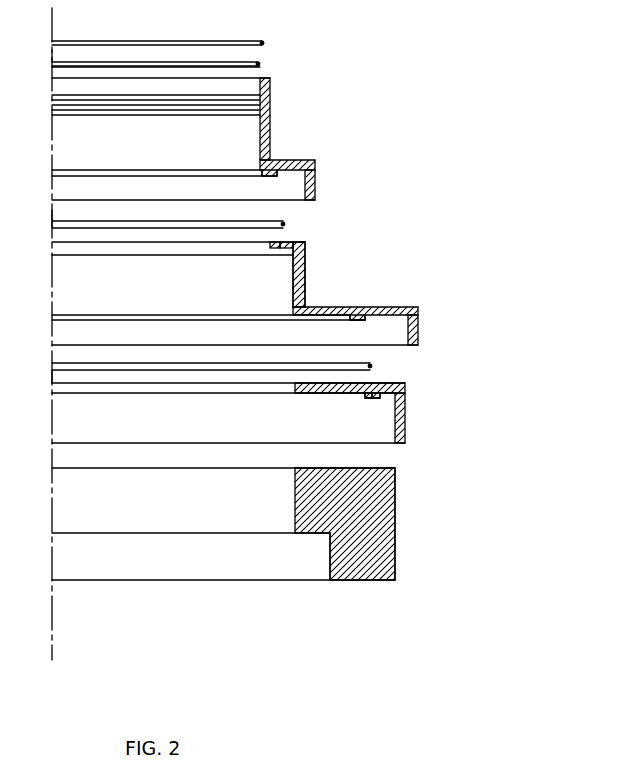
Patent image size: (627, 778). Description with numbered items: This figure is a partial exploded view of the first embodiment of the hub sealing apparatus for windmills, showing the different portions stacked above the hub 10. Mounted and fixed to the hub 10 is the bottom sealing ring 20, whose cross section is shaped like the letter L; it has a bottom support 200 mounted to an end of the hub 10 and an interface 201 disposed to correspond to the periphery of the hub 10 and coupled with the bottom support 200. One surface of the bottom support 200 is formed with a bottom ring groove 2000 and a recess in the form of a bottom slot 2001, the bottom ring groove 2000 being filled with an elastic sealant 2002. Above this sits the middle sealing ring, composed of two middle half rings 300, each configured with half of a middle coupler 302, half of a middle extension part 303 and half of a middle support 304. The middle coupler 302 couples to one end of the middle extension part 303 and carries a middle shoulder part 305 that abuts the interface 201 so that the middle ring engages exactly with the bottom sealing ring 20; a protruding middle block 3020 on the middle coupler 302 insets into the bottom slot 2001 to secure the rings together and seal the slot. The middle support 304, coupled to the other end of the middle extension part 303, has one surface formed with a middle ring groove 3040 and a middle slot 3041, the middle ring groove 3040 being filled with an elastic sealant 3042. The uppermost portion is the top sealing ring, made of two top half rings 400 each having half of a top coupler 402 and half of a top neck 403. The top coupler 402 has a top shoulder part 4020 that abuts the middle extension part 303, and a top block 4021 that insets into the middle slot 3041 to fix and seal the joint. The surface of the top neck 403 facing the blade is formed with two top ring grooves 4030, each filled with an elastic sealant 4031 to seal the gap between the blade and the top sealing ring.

The hub 10 is at (396, 540).
The bottom sealing ring 20 is at (555, 400).
The bottom support 200 is at (404, 402).
The interface 201 is at (406, 438).
The bottom ring groove 2000 is at (378, 399).
The bottom slot 2001 is at (370, 394).
The sealant 2002 is at (372, 366).
The middle half ring 300 is at (525, 250).
The middle coupler 302 is at (412, 316).
The middle extension part 303 is at (300, 272).
The middle support 304 is at (306, 244).
The middle shoulder part 305 is at (419, 326).
The middle block 3020 is at (362, 319).
The middle ring groove 3040 is at (290, 250).
The middle slot 3041 is at (280, 246).
The sealant 3042 is at (285, 224).
The top half ring 400 is at (420, 105).
The top coupler 402 is at (300, 162).
The top neck 403 is at (270, 118).
The top shoulder part 4020 is at (316, 186).
The top block 4021 is at (266, 177).
The top ring grooves 4030 is at (183, 106).
The sealant 4031 is at (262, 64).